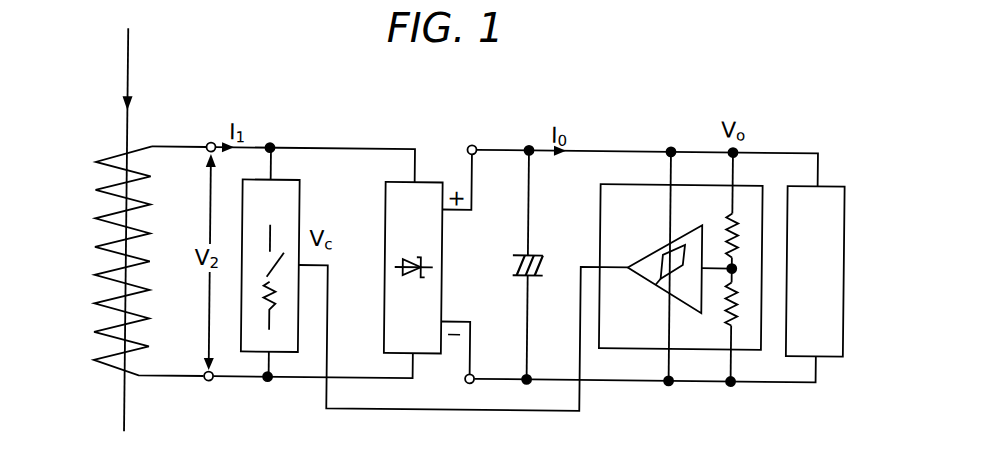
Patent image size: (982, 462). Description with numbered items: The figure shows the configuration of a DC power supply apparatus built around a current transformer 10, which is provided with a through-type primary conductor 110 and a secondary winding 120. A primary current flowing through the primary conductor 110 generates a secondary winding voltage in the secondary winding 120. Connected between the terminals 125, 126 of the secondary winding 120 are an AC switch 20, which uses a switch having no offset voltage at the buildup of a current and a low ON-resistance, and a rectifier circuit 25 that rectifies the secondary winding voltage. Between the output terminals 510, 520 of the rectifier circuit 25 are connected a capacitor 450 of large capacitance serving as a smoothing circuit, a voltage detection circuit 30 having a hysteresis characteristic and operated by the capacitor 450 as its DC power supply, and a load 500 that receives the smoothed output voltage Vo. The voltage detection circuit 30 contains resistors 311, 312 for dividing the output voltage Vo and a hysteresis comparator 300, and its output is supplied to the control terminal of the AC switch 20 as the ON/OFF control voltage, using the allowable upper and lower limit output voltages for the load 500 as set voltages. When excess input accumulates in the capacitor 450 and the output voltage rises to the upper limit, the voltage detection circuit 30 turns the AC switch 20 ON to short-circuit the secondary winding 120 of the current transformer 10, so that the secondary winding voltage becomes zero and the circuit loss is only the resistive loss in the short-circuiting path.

The current transformer 10 is at (129, 229).
The primary conductor 110 is at (120, 129).
The secondary winding 120 is at (153, 200).
The terminal 125 is at (210, 384).
The terminal 126 is at (211, 141).
The AC switch 20 is at (300, 198).
The rectifier circuit 25 is at (443, 251).
The voltage detection circuit 30 is at (658, 181).
The hysteresis comparator 300 is at (661, 247).
The resistor 311 is at (728, 300).
The resistor 312 is at (726, 230).
The capacitor 450 is at (542, 256).
The load 500 is at (825, 181).
The output terminal 510 is at (470, 384).
The output terminal 520 is at (474, 141).